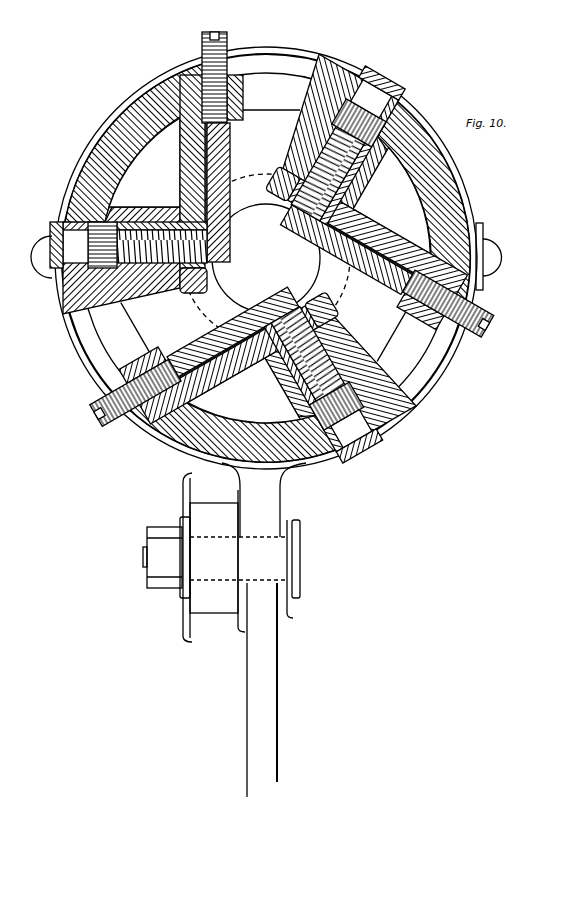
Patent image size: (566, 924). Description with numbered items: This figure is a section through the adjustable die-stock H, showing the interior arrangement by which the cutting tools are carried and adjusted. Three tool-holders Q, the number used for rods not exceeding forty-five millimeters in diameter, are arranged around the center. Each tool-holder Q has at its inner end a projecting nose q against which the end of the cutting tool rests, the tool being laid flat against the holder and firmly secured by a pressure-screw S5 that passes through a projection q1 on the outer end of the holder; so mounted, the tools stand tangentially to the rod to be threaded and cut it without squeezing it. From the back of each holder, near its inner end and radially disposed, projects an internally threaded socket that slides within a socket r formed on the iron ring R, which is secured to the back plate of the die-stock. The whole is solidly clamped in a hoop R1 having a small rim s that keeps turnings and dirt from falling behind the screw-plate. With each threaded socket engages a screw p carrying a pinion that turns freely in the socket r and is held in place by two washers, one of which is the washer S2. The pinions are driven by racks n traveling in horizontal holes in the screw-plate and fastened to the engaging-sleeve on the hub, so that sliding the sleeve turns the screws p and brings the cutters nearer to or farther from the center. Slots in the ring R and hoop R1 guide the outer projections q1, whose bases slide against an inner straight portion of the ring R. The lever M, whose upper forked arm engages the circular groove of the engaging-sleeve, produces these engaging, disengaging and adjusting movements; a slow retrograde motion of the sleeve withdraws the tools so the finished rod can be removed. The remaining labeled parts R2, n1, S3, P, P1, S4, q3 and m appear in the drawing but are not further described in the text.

The iron ring R is at (416, 200).
The hoop R1 is at (141, 151).
The housing ring section R2 is at (275, 419).
The racks n is at (239, 332).
The spring housing body n1 is at (336, 231).
The tool-holders Q is at (302, 249).
The projecting nose q is at (229, 229).
The projection q1 is at (258, 299).
The adjusting screw S3 is at (208, 28).
The pressure-screw S5 is at (288, 351).
The rim s is at (290, 250).
The socket r is at (244, 274).
The screw p is at (241, 263).
The plunger P is at (102, 245).
The plunger P1 is at (347, 264).
The washer S2 is at (47, 250).
The nut S4 is at (382, 77).
The nut block q3 is at (367, 445).
The die-stock H is at (489, 247).
The hub m is at (221, 558).
The lever M is at (262, 690).